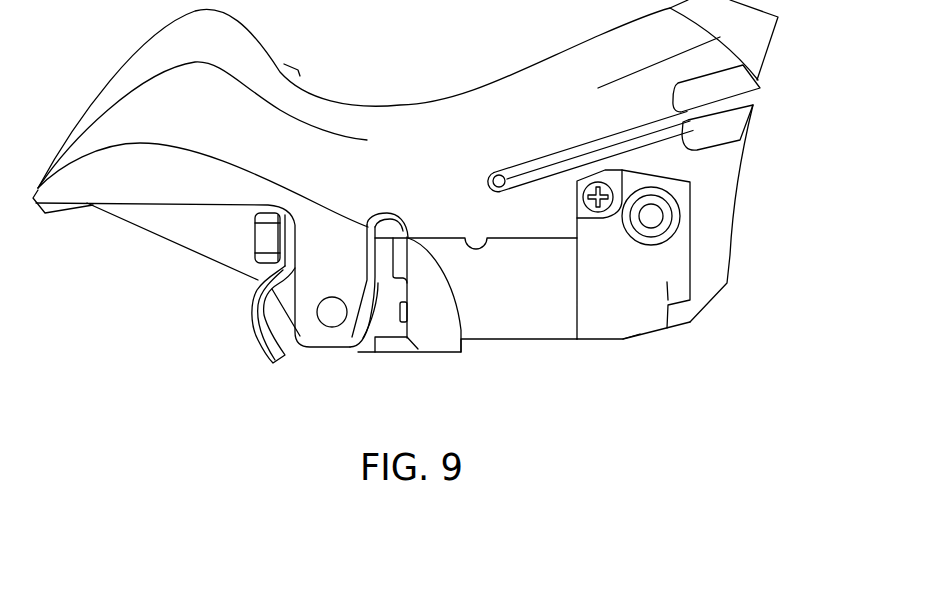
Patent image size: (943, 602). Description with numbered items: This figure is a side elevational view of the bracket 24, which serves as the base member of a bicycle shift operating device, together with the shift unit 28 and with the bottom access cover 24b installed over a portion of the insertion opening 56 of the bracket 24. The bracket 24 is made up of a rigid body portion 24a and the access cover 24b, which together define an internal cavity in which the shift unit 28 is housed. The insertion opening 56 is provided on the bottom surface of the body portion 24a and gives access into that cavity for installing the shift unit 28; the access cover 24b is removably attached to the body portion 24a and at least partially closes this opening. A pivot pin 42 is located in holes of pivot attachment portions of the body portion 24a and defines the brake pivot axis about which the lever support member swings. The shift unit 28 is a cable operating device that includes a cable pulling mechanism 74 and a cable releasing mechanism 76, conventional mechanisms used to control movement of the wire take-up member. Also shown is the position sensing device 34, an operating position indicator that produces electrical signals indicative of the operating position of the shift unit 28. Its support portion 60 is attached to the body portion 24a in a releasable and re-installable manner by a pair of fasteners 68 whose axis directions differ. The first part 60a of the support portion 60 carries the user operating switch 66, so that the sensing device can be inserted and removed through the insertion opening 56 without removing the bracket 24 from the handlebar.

The bracket 24 is at (507, 82).
The body portion 24a is at (388, 105).
The access cover 24b is at (502, 340).
The shift unit 28 is at (236, 234).
The position sensing device 34 is at (578, 372).
The pivot pin 42 is at (333, 310).
The insertion opening 56 is at (465, 237).
The support portion 60 is at (637, 342).
The first part 60a is at (667, 282).
The user operating switch 66 is at (670, 226).
The fasteners 68 is at (604, 217).
The cable pulling mechanism 74 is at (258, 350).
The cable releasing mechanism 76 is at (395, 360).